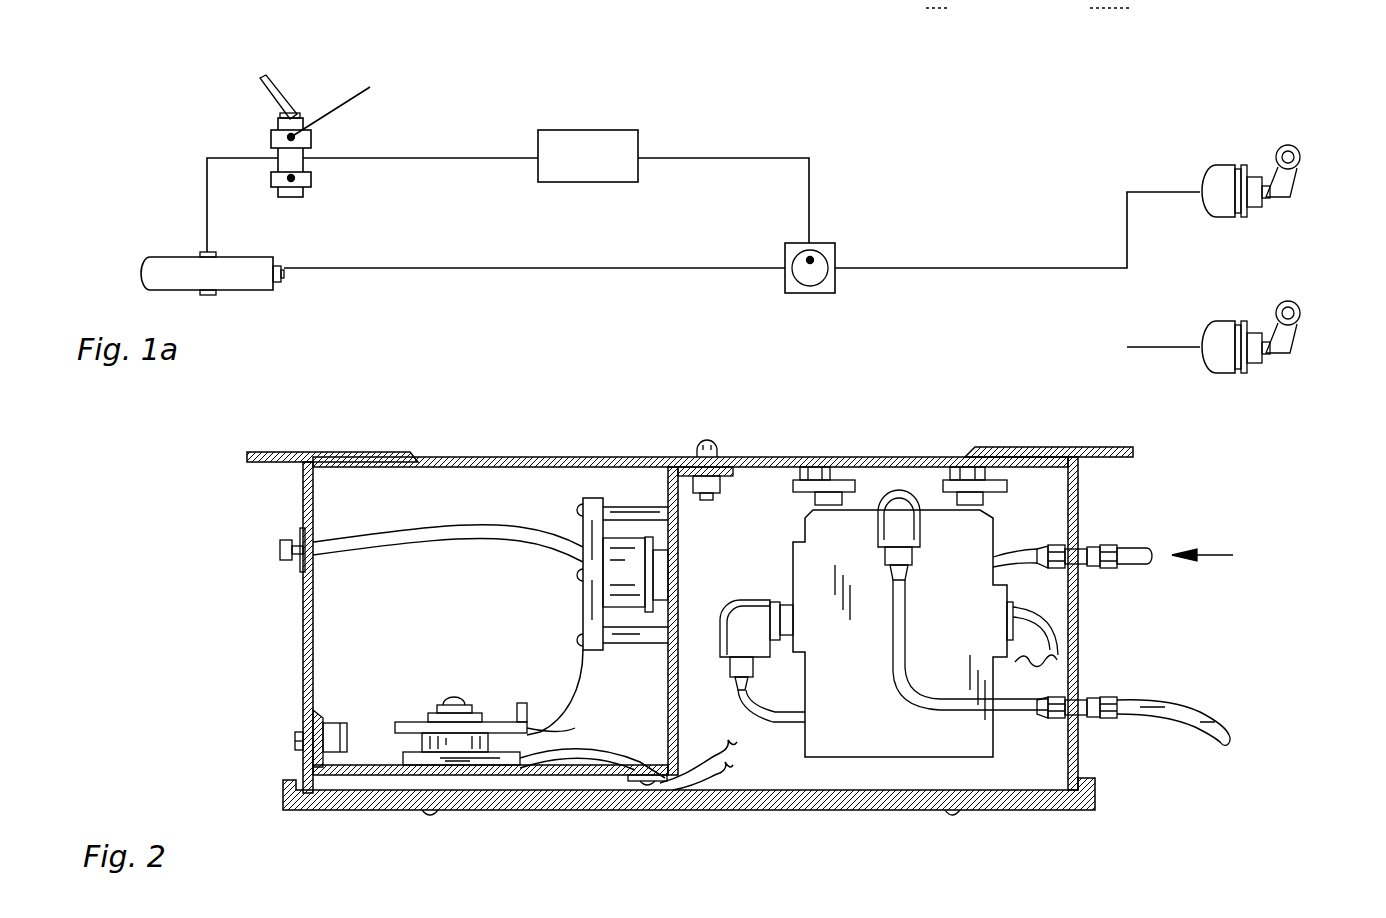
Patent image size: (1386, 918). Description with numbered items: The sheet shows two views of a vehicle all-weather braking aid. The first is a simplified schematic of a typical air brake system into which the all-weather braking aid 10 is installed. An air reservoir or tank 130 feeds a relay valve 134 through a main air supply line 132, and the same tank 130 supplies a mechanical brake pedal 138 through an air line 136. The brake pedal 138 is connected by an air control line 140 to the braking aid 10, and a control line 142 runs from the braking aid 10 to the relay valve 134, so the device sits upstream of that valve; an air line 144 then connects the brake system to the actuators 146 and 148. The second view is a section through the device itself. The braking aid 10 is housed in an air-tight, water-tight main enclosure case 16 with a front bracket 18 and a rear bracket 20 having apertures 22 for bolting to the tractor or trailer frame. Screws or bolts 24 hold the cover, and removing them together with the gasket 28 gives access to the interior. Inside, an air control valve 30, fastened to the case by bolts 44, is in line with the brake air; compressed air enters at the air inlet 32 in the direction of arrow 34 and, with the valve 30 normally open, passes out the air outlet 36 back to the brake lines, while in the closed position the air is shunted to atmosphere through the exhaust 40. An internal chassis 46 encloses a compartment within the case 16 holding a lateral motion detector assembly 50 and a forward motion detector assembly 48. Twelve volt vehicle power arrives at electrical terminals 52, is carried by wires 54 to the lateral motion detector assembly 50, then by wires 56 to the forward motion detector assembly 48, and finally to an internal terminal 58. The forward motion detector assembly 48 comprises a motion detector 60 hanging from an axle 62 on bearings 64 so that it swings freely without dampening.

In FIG. 1A, the all-weather braking aid 10 is at (585, 130).
In FIG. 1A, the air reservoir or tank 130 is at (243, 292).
In FIG. 1A, the main air supply line 132 is at (533, 270).
In FIG. 1A, the relay valve 134 is at (812, 293).
In FIG. 1A, the air line 136 is at (207, 185).
In FIG. 1A, the brake pedal 138 is at (280, 130).
In FIG. 1A, the air control line 140 is at (422, 157).
In FIG. 1A, the control line 142 is at (809, 187).
In FIG. 1A, the air line 144 is at (950, 267).
In FIG. 1A, the actuator 146 is at (1227, 167).
In FIG. 1A, the actuator 148 is at (1225, 372).
In FIG. 2, the main enclosure case 16 is at (900, 448).
In FIG. 2, the front bracket 18 is at (317, 452).
In FIG. 2, the rear bracket 20 is at (1082, 442).
In FIG. 2, the apertures 22 is at (273, 452).
In FIG. 2, the screws or bolts 24 is at (430, 817).
In FIG. 2, the gasket 28 is at (750, 798).
In FIG. 2, the air control valve 30 is at (817, 530).
In FIG. 2, the air inlet 32 is at (1133, 545).
In FIG. 2, the arrow 34 is at (1217, 552).
In FIG. 2, the air outlet 36 is at (1203, 713).
In FIG. 2, the exhaust 40 is at (1133, 697).
In FIG. 2, the bolts 44 is at (815, 530).
In FIG. 2, the internal chassis 46 is at (667, 493).
In FIG. 2, the forward motion detector assembly 48 is at (420, 735).
In FIG. 2, the lateral motion detector assembly 50 is at (593, 498).
In FIG. 2, the electrical terminals 52 is at (280, 547).
In FIG. 2, the wires 54 is at (395, 535).
In FIG. 2, the wires 56 is at (572, 650).
In FIG. 2, the internal terminal 58 is at (668, 808).
In FIG. 2, the motion detector 60 is at (443, 700).
In FIG. 2, the axle 62 is at (457, 695).
In FIG. 2, the bearings 64 is at (413, 738).